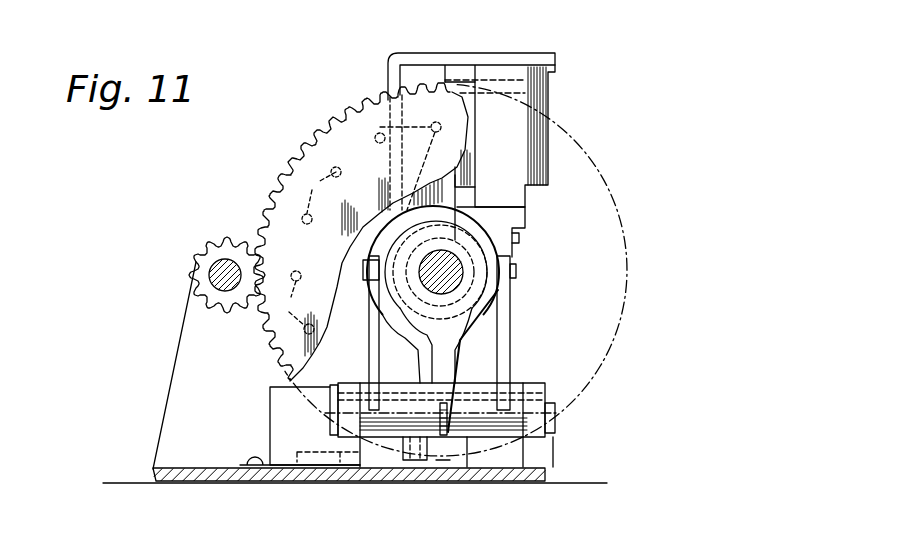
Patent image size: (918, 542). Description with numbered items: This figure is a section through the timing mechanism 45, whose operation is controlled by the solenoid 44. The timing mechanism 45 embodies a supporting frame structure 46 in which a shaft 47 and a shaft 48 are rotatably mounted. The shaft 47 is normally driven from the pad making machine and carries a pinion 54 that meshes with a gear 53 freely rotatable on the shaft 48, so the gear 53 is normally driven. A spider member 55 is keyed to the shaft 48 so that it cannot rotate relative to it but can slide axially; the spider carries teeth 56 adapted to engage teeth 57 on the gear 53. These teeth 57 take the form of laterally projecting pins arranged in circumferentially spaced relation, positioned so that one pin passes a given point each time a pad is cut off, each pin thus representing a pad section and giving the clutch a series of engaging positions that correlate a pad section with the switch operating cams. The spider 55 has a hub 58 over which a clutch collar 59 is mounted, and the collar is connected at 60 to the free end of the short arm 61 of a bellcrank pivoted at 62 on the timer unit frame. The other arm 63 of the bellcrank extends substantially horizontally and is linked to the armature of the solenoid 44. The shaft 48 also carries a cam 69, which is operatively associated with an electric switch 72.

The solenoid 44 is at (547, 103).
The timing mechanism 45 is at (326, 112).
The supporting frame structure 46 is at (151, 477).
The shaft 47 is at (214, 269).
The shaft 48 is at (463, 285).
The gear 53 is at (268, 196).
The pinion 54 is at (202, 294).
The spider member 55 is at (490, 211).
The teeth 56 is at (435, 122).
The teeth 57 is at (380, 133).
The hub 58 is at (520, 238).
The clutch collar 59 is at (494, 247).
The connection 60 is at (517, 272).
The short arm 61 is at (511, 331).
The pivot 62 is at (557, 408).
The arm 63 is at (532, 382).
The cam 69 is at (494, 320).
The electric switch 72 is at (443, 452).